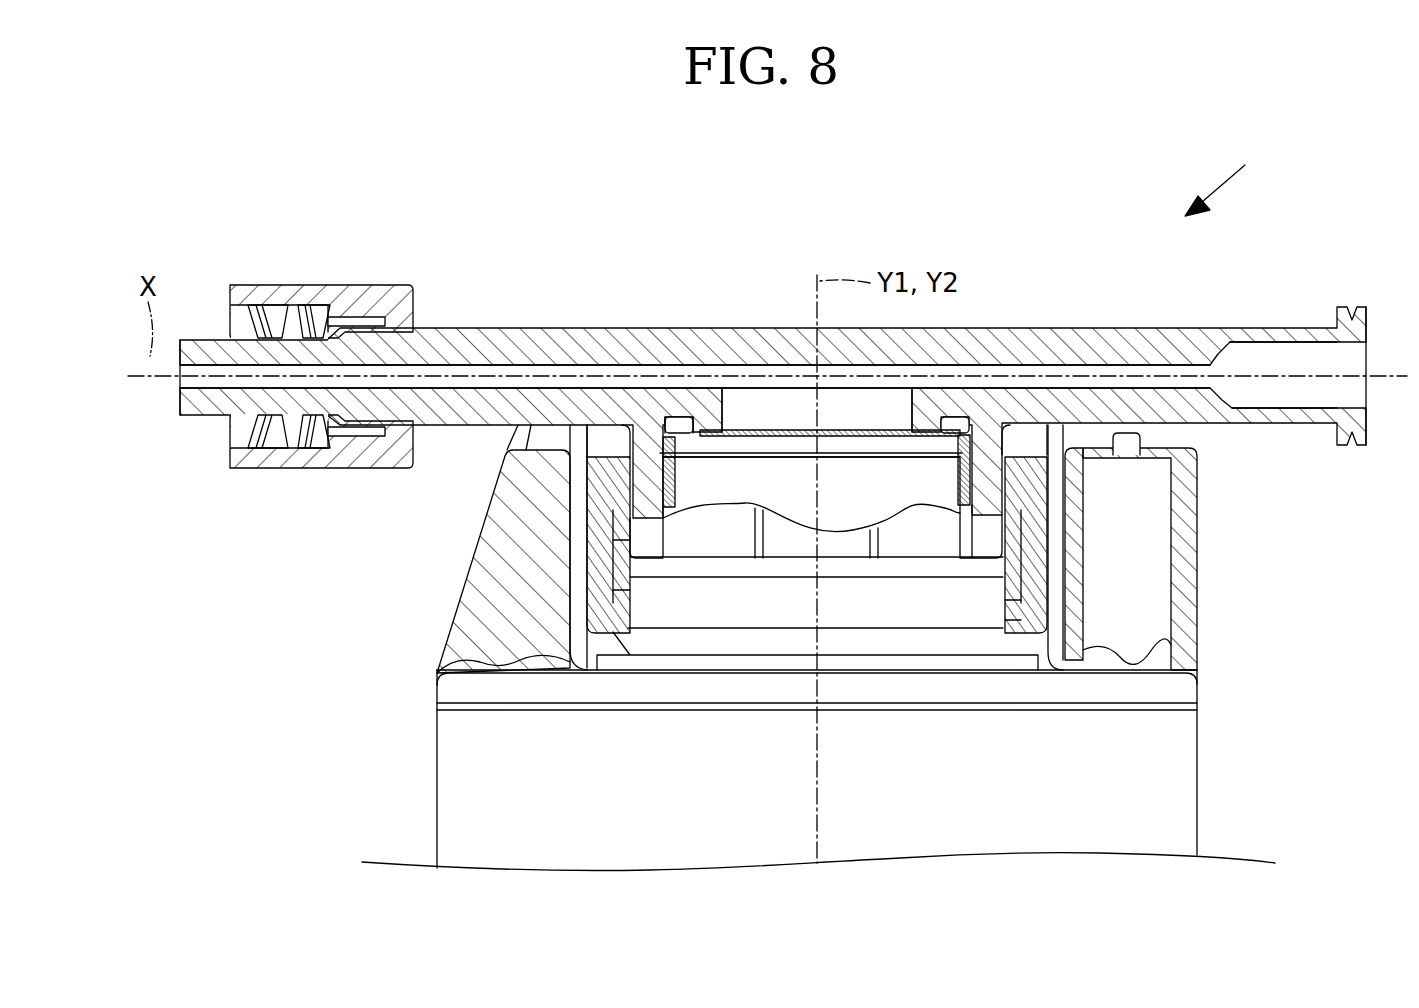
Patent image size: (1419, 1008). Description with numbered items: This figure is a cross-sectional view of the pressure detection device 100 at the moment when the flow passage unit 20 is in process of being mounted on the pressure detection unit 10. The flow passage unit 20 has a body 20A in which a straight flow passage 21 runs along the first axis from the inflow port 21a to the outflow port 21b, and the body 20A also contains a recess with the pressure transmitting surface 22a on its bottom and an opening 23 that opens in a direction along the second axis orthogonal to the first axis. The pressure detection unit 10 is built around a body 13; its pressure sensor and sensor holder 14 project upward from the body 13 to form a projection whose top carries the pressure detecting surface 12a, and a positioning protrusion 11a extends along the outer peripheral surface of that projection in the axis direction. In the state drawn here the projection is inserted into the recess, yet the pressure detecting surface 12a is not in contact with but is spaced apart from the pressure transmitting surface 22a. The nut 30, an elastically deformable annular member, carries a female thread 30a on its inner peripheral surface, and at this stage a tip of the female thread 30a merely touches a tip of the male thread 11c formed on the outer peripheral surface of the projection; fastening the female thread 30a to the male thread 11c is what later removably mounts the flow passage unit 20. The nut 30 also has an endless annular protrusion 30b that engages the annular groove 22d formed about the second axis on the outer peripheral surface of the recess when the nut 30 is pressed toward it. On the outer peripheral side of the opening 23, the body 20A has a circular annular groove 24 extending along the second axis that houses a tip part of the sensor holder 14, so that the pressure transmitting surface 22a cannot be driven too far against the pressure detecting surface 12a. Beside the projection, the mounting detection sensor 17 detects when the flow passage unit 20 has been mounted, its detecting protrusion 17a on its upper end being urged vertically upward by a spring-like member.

The pressure detection device 100 is at (1214, 157).
The pressure detection unit 10 is at (1203, 570).
The positioning protrusion 11a is at (786, 510).
The male thread 11c is at (1050, 620).
The pressure detecting surface 12a is at (870, 466).
The body 13 is at (1200, 765).
The sensor holder 14 is at (962, 432).
The mounting detection sensor 17 is at (1188, 496).
The detecting protrusion 17a is at (1145, 441).
The flow passage unit 20 is at (645, 324).
The body 20A is at (1057, 338).
The flow passage 21 is at (530, 370).
The inflow port 21a is at (1355, 447).
The outflow port 21b is at (186, 418).
The pressure transmitting surface 22a is at (817, 563).
The annular groove 22d is at (1066, 480).
The opening 23 is at (740, 428).
The circular annular groove 24 is at (672, 420).
The nut 30 is at (1049, 540).
The female thread 30a is at (632, 594).
The annular protrusion 30b is at (638, 495).